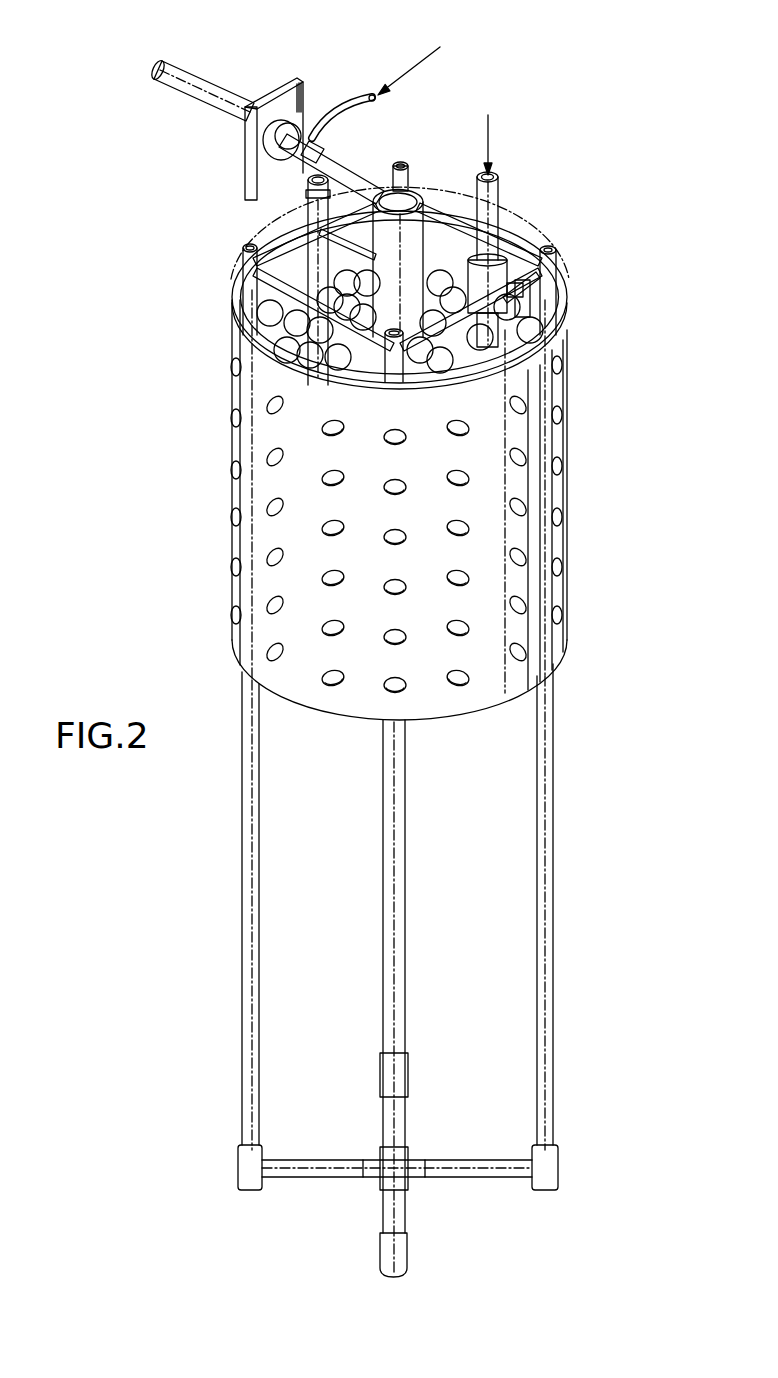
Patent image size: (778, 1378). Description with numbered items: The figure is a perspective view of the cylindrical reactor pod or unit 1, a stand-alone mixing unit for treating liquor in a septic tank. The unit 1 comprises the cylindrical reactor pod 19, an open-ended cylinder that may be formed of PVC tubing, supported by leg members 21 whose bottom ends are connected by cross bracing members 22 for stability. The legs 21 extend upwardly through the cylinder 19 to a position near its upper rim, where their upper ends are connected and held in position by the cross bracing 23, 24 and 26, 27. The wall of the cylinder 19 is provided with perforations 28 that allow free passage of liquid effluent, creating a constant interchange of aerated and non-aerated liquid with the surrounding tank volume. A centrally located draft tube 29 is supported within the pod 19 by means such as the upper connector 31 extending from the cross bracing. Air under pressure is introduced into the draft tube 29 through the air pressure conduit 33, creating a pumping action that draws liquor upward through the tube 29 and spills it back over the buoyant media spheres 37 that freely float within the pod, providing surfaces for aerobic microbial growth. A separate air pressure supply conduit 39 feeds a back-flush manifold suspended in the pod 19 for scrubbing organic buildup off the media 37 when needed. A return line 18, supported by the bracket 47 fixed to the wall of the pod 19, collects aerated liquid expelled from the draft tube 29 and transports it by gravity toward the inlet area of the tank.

The cylindrical reactor pod or unit 1 is at (222, 452).
The return line 18 is at (208, 80).
The cylindrical reactor pod 19 is at (428, 523).
The leg members 21 is at (259, 945).
The cross bracing members 22 is at (320, 1162).
The cross bracing 23 is at (443, 207).
The cross bracing 24 is at (249, 243).
The cross bracing 26 is at (250, 297).
The cross bracing 27 is at (438, 357).
The perforations 28 is at (383, 690).
The draft tube 29 is at (417, 249).
The upper connector 31 is at (403, 248).
The air pressure conduit 33 is at (367, 110).
The buoyant media spheres 37 is at (315, 387).
The air pressure supply conduit 39 is at (500, 205).
The bracket 47 is at (243, 158).